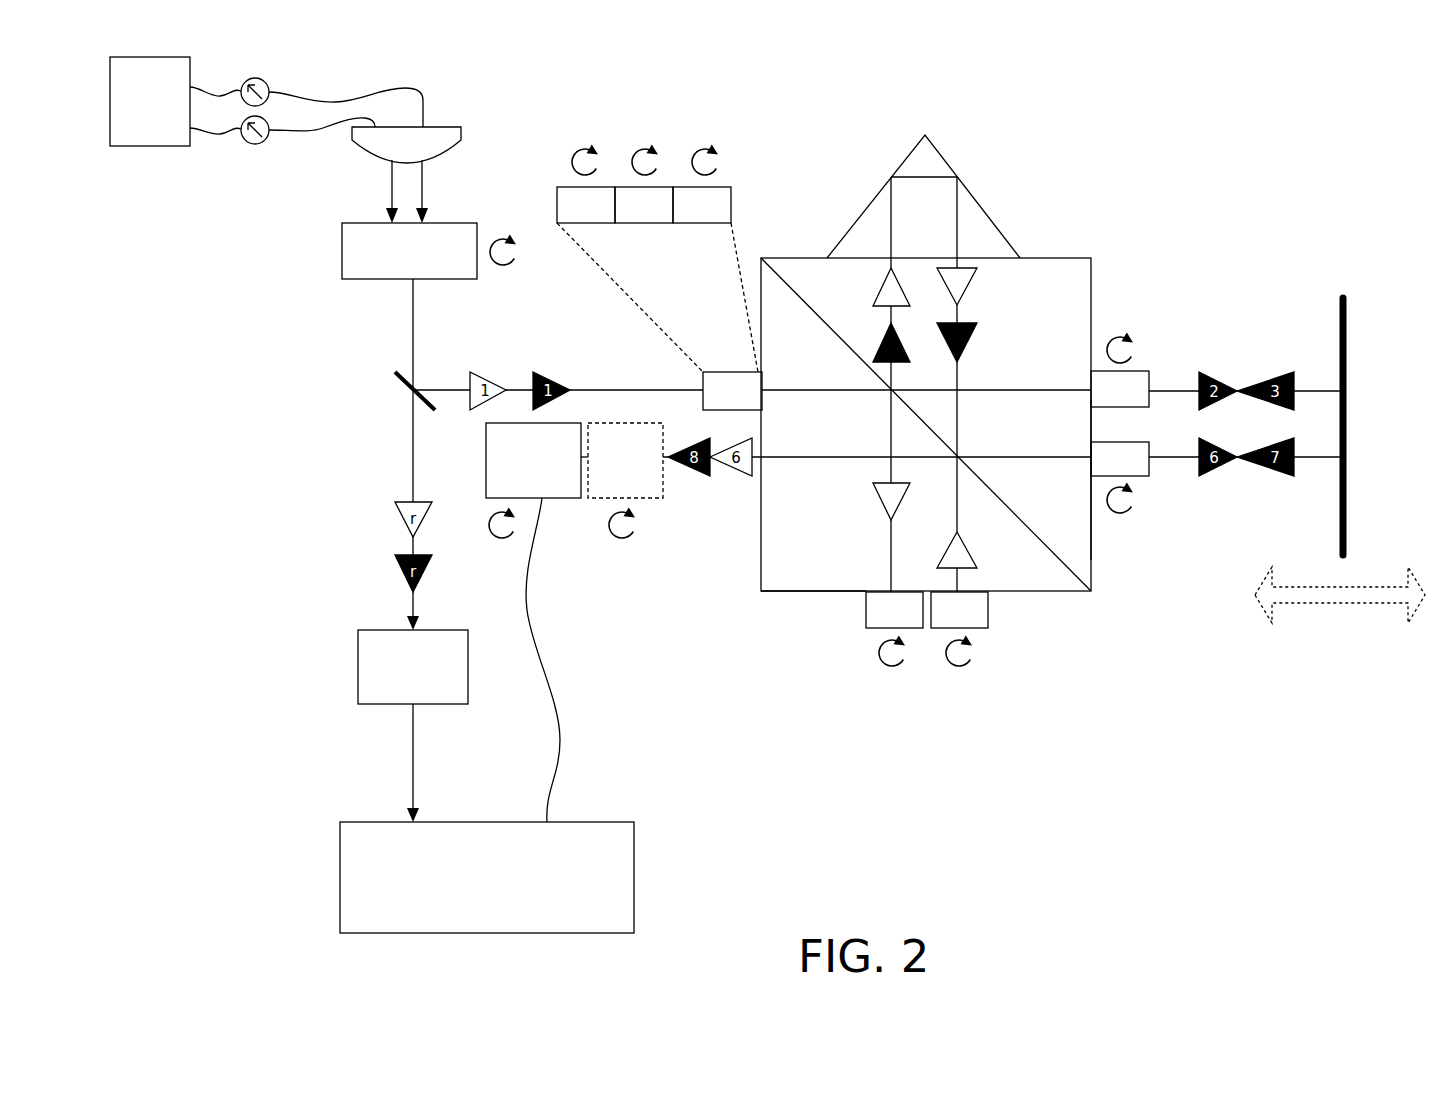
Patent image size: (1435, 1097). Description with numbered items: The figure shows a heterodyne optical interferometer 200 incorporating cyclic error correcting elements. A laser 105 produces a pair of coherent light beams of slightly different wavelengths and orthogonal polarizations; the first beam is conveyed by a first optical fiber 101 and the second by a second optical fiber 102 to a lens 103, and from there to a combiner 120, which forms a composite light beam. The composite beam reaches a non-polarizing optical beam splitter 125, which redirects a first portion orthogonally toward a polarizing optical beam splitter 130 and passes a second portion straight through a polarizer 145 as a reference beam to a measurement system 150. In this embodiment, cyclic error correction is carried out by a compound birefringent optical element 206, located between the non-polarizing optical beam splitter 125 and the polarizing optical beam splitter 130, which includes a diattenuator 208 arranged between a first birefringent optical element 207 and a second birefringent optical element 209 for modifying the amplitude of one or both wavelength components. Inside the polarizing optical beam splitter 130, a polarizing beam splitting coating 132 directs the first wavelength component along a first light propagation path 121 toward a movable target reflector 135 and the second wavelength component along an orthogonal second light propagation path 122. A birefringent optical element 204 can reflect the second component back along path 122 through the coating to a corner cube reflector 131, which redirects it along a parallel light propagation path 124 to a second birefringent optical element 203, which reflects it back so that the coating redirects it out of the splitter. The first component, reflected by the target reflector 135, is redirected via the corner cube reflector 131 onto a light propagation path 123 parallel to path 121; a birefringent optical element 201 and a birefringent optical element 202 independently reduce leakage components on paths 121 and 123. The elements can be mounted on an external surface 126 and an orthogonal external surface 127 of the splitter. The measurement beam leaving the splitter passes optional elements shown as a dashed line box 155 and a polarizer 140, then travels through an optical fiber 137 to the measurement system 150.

The heterodyne optical interferometer 200 is at (1154, 809).
The laser 105 is at (150, 101).
The first optical fiber 101 is at (358, 95).
The second optical fiber 102 is at (324, 130).
The lens 103 is at (463, 136).
The combiner 120 is at (342, 262).
The non-polarizing optical beam splitter 125 is at (403, 387).
The polarizing optical beam splitter 130 is at (951, 383).
The corner cube reflector 131 is at (857, 220).
The polarizing beam splitting coating 132 is at (808, 305).
The first light propagation path 121 is at (1065, 388).
The second light propagation path 122 is at (888, 440).
The light propagation path 123 is at (1062, 455).
The light propagation path 124 is at (955, 503).
The external surface 126 is at (1099, 531).
The external surface 127 is at (825, 600).
The movable target reflector 135 is at (1347, 347).
The optical fiber 137 is at (528, 646).
The polarizer 140 is at (533, 480).
The polarizer 145 is at (413, 667).
The measurement system 150 is at (487, 877).
The dashed line box 155 is at (625, 480).
The birefringent optical element 201 is at (1120, 370).
The birefringent optical element 202 is at (1120, 477).
The second birefringent optical element 203 is at (959, 629).
The birefringent optical element 204 is at (894, 629).
The compound birefringent optical element 206 is at (732, 391).
The first birefringent optical element 207 is at (586, 184).
The diattenuator 208 is at (644, 184).
The second birefringent optical element 209 is at (702, 184).